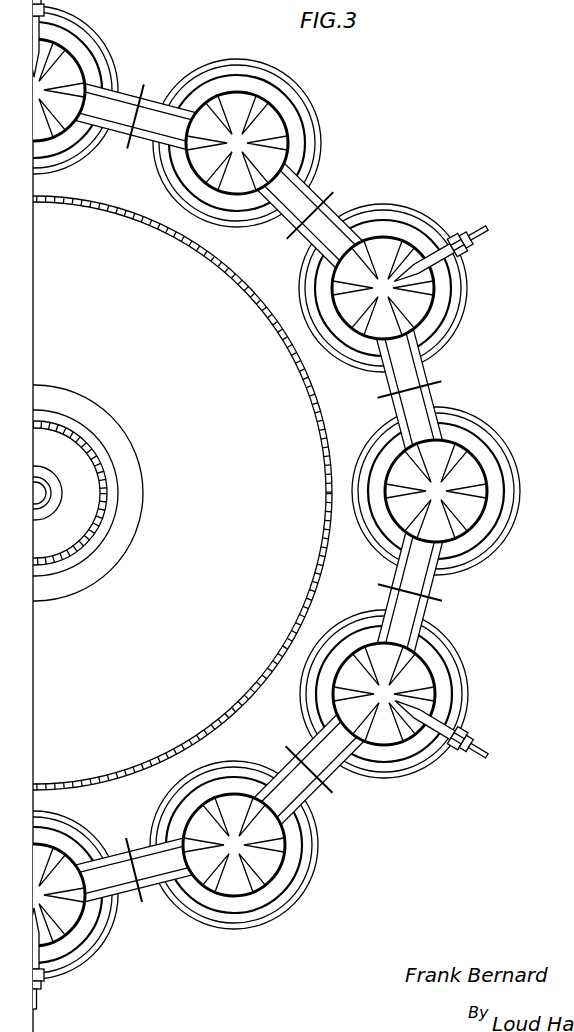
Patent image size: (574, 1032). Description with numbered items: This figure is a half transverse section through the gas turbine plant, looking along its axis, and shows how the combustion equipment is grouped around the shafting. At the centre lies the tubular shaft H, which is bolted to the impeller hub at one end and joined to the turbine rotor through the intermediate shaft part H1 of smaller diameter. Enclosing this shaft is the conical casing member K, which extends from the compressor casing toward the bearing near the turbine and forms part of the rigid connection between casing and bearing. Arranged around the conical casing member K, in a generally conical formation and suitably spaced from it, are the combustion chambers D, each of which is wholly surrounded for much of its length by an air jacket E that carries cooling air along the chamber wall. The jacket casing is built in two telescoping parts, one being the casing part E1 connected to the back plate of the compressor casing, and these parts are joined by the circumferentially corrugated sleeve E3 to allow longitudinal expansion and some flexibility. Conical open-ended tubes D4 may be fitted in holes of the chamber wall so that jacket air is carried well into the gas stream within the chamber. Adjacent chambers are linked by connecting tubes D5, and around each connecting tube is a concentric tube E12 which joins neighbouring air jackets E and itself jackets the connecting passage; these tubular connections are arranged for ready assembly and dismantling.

The combustion chamber D is at (272, 120).
The conical open-ended tube D4 is at (402, 678).
The connecting tube D5 is at (437, 400).
The air jacket E is at (383, 237).
The air jacket casing part E1 is at (455, 286).
The circumferentially corrugated sleeve E3 is at (510, 453).
The concentric tube E12 is at (447, 355).
The conical casing member K is at (222, 270).
The tubular shaft H is at (92, 452).
The intermediate shaft part H1 is at (60, 493).